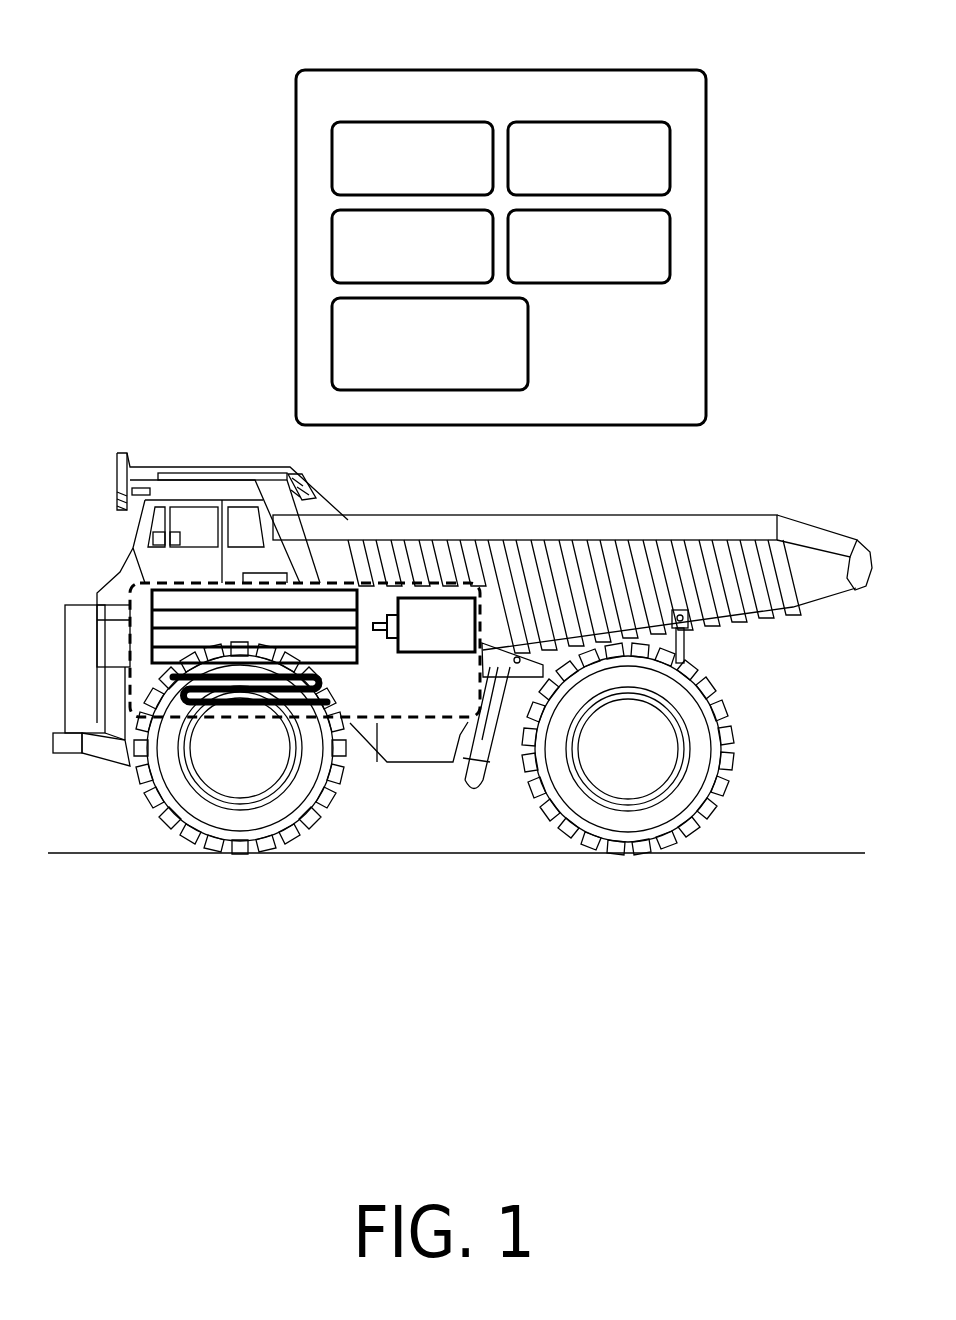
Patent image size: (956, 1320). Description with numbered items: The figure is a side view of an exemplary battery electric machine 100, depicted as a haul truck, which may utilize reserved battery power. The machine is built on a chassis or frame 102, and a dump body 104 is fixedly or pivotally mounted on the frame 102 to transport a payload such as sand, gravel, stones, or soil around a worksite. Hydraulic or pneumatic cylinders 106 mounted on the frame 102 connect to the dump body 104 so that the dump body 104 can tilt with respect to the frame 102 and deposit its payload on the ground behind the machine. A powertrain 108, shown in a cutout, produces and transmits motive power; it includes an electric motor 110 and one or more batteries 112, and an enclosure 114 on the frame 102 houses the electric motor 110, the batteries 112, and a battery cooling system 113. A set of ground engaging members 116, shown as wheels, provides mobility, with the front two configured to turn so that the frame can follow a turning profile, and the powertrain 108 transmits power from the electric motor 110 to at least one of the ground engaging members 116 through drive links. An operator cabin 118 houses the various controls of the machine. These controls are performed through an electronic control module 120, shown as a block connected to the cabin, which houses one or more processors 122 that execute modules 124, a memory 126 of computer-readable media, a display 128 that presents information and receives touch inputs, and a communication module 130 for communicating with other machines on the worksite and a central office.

The battery electric machine 100 is at (118, 50).
The frame 102 is at (364, 762).
The dump body 104 is at (706, 518).
The hydraulic and/or pneumatic cylinders 106 is at (508, 790).
The powertrain 108 is at (130, 650).
The electric motor 110 is at (455, 637).
The batteries 112 is at (357, 638).
The battery cooling system 113 is at (317, 677).
The enclosure 114 is at (66, 669).
The ground engaging members 116 is at (264, 764).
The operator cabin 118 is at (135, 547).
The electronic control module 120 is at (192, 547).
The processors 122 is at (432, 182).
The modules 124 is at (609, 182).
The memory 126 is at (432, 270).
The display 128 is at (609, 270).
The communication module 130 is at (450, 382).